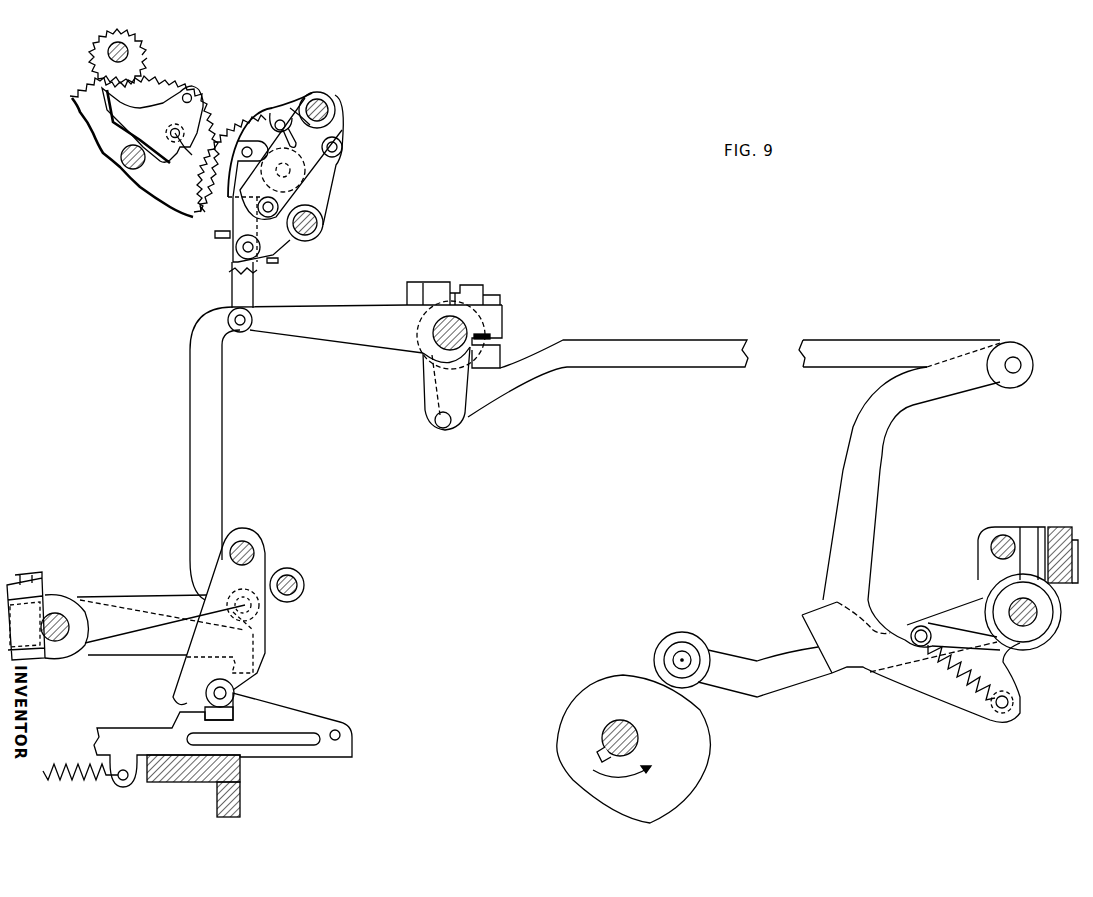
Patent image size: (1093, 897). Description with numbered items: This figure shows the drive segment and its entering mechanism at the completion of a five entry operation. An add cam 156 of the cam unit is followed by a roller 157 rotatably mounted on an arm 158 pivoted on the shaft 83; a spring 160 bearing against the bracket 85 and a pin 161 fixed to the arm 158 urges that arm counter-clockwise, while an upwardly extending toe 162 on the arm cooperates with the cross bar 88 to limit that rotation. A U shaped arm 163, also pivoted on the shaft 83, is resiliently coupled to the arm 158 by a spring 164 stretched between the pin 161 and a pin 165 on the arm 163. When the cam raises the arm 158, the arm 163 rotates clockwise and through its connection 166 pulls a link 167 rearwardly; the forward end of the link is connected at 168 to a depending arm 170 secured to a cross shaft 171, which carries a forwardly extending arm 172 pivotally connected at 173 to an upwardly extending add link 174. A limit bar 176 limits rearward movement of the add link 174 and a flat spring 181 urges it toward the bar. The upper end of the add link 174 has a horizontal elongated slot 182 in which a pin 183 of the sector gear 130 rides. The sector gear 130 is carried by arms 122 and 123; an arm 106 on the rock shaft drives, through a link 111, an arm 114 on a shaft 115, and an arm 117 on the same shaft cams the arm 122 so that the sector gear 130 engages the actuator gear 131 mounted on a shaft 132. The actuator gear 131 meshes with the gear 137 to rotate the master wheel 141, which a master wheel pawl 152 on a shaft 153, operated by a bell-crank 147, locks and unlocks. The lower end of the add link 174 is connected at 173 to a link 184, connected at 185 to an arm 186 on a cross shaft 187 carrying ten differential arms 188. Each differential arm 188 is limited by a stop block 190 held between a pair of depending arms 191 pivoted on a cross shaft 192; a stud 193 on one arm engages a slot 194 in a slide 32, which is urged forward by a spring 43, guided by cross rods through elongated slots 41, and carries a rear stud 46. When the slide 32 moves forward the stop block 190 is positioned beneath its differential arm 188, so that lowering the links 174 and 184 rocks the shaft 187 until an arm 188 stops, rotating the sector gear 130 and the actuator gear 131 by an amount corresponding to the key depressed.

The master wheel 141 is at (100, 77).
The gear 137 is at (138, 64).
The shaft 153 is at (190, 93).
The master wheel pawl 152 is at (127, 123).
The actuator gear 131 is at (100, 143).
The shaft 132 is at (133, 168).
The bell-crank 147 is at (198, 147).
The pin 183 is at (212, 216).
The flat spring 181 is at (215, 236).
The add link 174 is at (232, 272).
The limit bar 176 is at (273, 264).
The arm 106 is at (288, 250).
The sector gear 130 is at (238, 122).
The horizontal elongated slot 182 is at (278, 120).
The arm 117 is at (290, 110).
The shaft 115 is at (323, 107).
The arm 114 is at (312, 140).
The link 111 is at (327, 173).
The arm 122 is at (327, 193).
The arm 123 is at (322, 217).
The pivot connection 173 is at (245, 332).
The forwardly extending arm 172 is at (330, 333).
The cross shaft 171 is at (438, 345).
The depending arm 170 is at (435, 396).
The pivot connection 168 is at (440, 428).
The link 167 is at (688, 337).
The pivot connection 166 is at (1020, 365).
The U shaped arm 163 is at (863, 492).
The cross bar 88 is at (1003, 538).
The toe 162 is at (1030, 538).
The bracket 85 is at (1070, 575).
The shaft 83 is at (1037, 614).
The spring 160 is at (1040, 636).
The pin 161 is at (915, 630).
The spring 164 is at (978, 690).
The pin 165 is at (1000, 712).
The arm 158 is at (790, 680).
The roller 157 is at (655, 652).
The add cam 156 is at (573, 757).
The link 184 is at (200, 452).
The cross shaft 192 is at (243, 548).
The pivot connection 185 is at (245, 600).
The arm 186 is at (173, 602).
The cross shaft 187 is at (60, 620).
The differential arms 188 is at (140, 650).
The depending arms 191 is at (255, 627).
The stop block 190 is at (258, 667).
The stud 193 is at (216, 687).
The slot 194 is at (205, 714).
The slide 32 is at (310, 722).
The stud 46 is at (342, 735).
The elongated slots 41 is at (252, 740).
The spring 43 is at (68, 783).